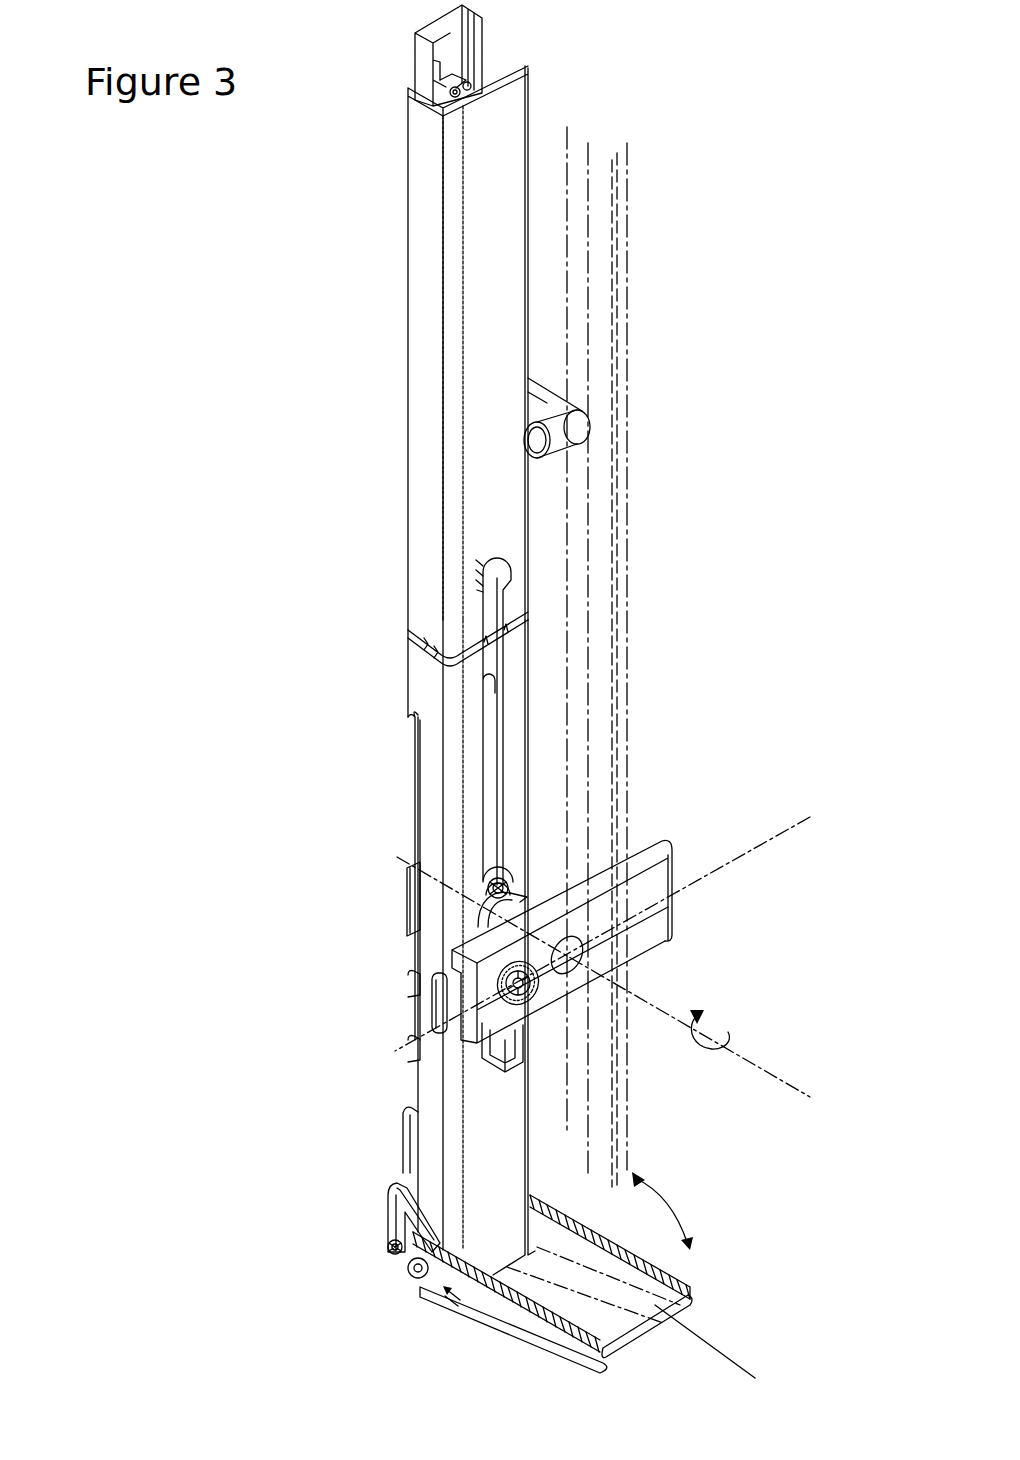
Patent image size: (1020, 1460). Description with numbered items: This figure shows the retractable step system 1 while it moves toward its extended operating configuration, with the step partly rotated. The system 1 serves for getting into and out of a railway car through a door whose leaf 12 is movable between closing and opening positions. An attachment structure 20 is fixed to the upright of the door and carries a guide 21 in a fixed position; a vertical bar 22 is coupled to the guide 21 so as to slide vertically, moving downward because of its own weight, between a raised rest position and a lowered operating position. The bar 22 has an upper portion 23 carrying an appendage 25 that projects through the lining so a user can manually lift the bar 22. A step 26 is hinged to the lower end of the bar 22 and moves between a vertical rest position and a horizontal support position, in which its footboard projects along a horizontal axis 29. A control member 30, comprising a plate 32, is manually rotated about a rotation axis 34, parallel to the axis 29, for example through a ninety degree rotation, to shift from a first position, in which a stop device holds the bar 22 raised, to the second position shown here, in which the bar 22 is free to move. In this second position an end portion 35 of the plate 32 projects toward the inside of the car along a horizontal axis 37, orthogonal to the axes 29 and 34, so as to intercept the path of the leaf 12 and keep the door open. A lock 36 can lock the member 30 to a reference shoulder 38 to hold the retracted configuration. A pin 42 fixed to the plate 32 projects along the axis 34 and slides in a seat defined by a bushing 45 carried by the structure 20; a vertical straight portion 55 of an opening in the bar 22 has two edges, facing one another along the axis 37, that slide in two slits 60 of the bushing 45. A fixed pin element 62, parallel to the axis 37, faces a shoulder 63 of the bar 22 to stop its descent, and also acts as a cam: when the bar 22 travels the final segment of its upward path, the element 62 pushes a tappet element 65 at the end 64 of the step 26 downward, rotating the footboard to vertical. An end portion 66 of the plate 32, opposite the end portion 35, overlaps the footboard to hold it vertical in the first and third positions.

The retractable step system 1 is at (838, 596).
The leaf 12 is at (628, 620).
The attachment structure 20 is at (410, 1115).
The guide 21 is at (425, 50).
The vertical bar 22 is at (540, 158).
The upper portion 23 is at (515, 232).
The appendage 25 is at (548, 440).
The step 26 is at (621, 1352).
The horizontal axis 29 is at (688, 1344).
The control member 30 is at (672, 946).
The plate 32 is at (672, 872).
The rotation axis 34 is at (774, 1073).
The end portion 35 is at (676, 918).
The lock 36 is at (540, 1000).
The horizontal axis 37 is at (778, 850).
The reference shoulder 38 is at (530, 1050).
The pin 42 is at (515, 890).
The bushing 45 is at (490, 877).
The straight portion 55 is at (492, 763).
The slits 60 is at (456, 923).
The element 62 is at (395, 1213).
The shoulder 63 is at (413, 717).
The end 64 is at (423, 1237).
The tappet element 65 is at (415, 1270).
The end portion 66 is at (440, 1012).